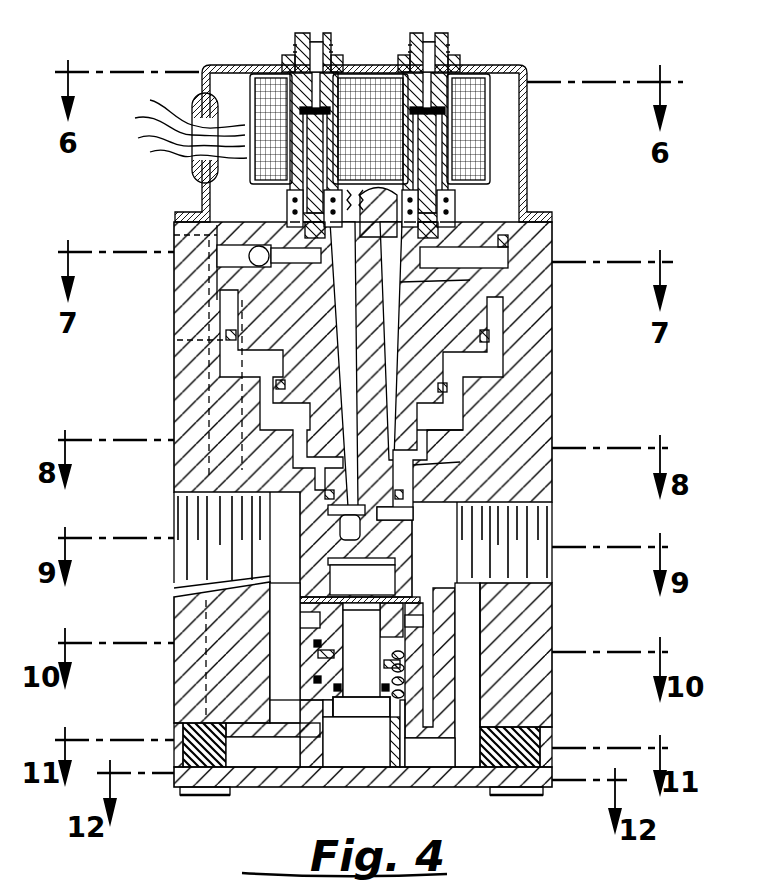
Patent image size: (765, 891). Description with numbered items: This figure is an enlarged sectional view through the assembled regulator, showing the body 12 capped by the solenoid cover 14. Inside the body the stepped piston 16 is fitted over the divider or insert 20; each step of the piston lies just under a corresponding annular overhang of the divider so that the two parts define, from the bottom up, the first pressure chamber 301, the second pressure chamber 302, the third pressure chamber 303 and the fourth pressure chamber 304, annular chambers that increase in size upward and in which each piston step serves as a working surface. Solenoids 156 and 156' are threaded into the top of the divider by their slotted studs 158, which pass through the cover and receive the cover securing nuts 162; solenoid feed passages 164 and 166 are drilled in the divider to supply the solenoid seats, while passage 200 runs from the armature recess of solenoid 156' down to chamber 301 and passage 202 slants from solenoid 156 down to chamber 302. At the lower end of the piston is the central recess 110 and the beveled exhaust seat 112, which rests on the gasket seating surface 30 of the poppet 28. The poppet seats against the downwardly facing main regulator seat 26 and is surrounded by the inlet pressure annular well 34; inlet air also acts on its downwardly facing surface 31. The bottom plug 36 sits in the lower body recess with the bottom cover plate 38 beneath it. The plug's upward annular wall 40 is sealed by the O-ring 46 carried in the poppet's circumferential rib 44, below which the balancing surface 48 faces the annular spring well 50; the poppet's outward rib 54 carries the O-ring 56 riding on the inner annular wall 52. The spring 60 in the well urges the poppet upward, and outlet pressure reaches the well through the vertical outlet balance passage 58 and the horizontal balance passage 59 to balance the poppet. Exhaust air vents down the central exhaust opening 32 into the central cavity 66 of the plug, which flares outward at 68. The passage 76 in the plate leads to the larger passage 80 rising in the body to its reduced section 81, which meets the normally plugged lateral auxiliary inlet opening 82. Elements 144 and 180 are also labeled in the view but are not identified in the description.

The body 12 is at (556, 425).
The solenoid cover 14 is at (200, 188).
The piston 16 is at (257, 392).
The divider or insert 20 is at (363, 409).
The main regulator seat 26 is at (413, 595).
The poppet 28 is at (414, 621).
The gasket seating surface 30 is at (393, 583).
The downwardly facing surface 31 is at (307, 622).
The central exhaust opening 32 is at (361, 651).
The inlet pressure annular well 34 is at (177, 592).
The bottom plug 36 is at (495, 768).
The bottom cover plate 38 is at (388, 780).
The upward annular wall 40 is at (420, 650).
The circumferential rib 44 is at (262, 660).
The O-ring 46 is at (318, 658).
The balancing surface 48 is at (390, 668).
The annular spring well 50 is at (330, 695).
The inner annular wall 52 is at (330, 703).
The outward rib 54 is at (338, 688).
The O-ring 56 is at (345, 692).
The vertical outlet balance passage 58 is at (468, 670).
The horizontal balance passage 59 is at (434, 760).
The spring 60 is at (420, 695).
The central cavity 66 is at (352, 755).
The outward flare 68 is at (272, 750).
The passage 76 is at (322, 790).
The larger passage 80 is at (175, 468).
The reduced section 81 is at (175, 379).
The lateral auxiliary inlet opening 82 is at (227, 240).
The downward central recess 110 is at (387, 573).
The exhaust seat 112 is at (303, 557).
The passage 144 is at (470, 258).
The solenoid 156 is at (522, 129).
The solenoid 156' is at (250, 99).
The slotted stud 158 is at (448, 42).
The cover securing nut 162 is at (460, 62).
The solenoid feed passage 164 is at (485, 214).
The solenoid feed passage 166 is at (284, 265).
The reference 180 is at (606, 885).
The passage 200 is at (345, 268).
The passage 202 is at (470, 280).
The first pressure chamber 301 is at (405, 512).
The second pressure chamber 302 is at (460, 462).
The third pressure chamber 303 is at (440, 410).
The fourth pressure chamber 304 is at (470, 360).